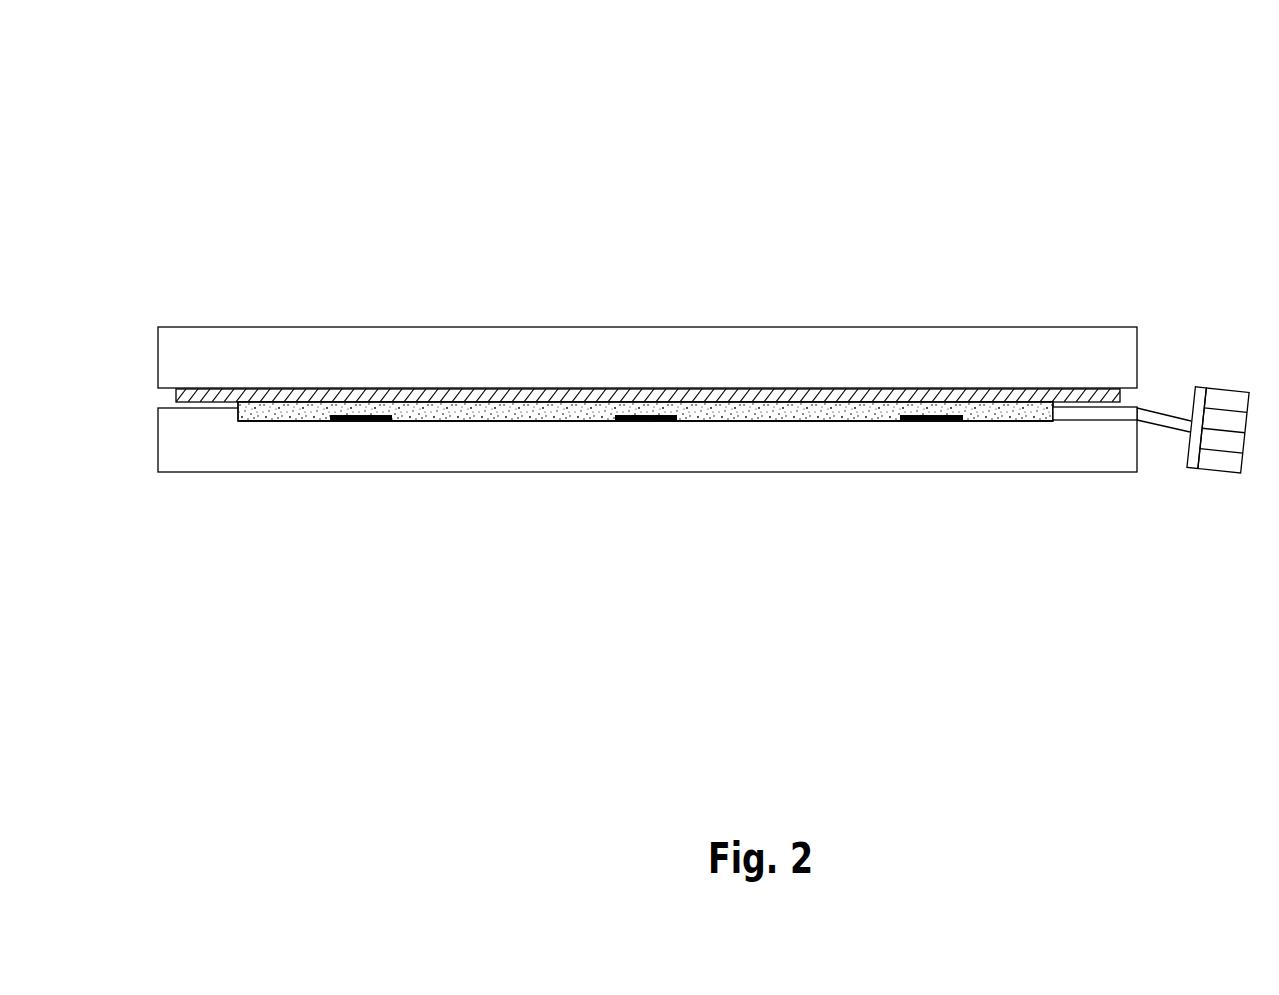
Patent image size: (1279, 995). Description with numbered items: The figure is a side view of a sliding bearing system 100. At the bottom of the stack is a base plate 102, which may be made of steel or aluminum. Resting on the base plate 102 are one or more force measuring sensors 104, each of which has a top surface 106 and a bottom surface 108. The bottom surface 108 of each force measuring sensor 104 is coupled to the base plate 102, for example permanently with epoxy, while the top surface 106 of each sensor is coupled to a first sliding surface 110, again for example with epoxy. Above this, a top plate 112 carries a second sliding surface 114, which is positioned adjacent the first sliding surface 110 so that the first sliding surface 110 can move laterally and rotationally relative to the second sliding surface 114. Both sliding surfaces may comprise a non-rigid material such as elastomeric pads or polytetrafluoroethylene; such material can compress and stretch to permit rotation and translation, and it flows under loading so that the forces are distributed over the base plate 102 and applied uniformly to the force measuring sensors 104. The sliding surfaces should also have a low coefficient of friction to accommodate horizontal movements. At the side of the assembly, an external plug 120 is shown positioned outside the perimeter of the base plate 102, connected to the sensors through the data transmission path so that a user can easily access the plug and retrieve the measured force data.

The sliding bearing system 100 is at (1068, 90).
The base plate 102 is at (430, 474).
The force measuring sensors 104 is at (648, 424).
The top surface 106 is at (637, 410).
The bottom surface 108 is at (667, 424).
The first sliding surface 110 is at (853, 423).
The top plate 112 is at (802, 329).
The second sliding surface 114 is at (445, 388).
The external plug 120 is at (1228, 388).